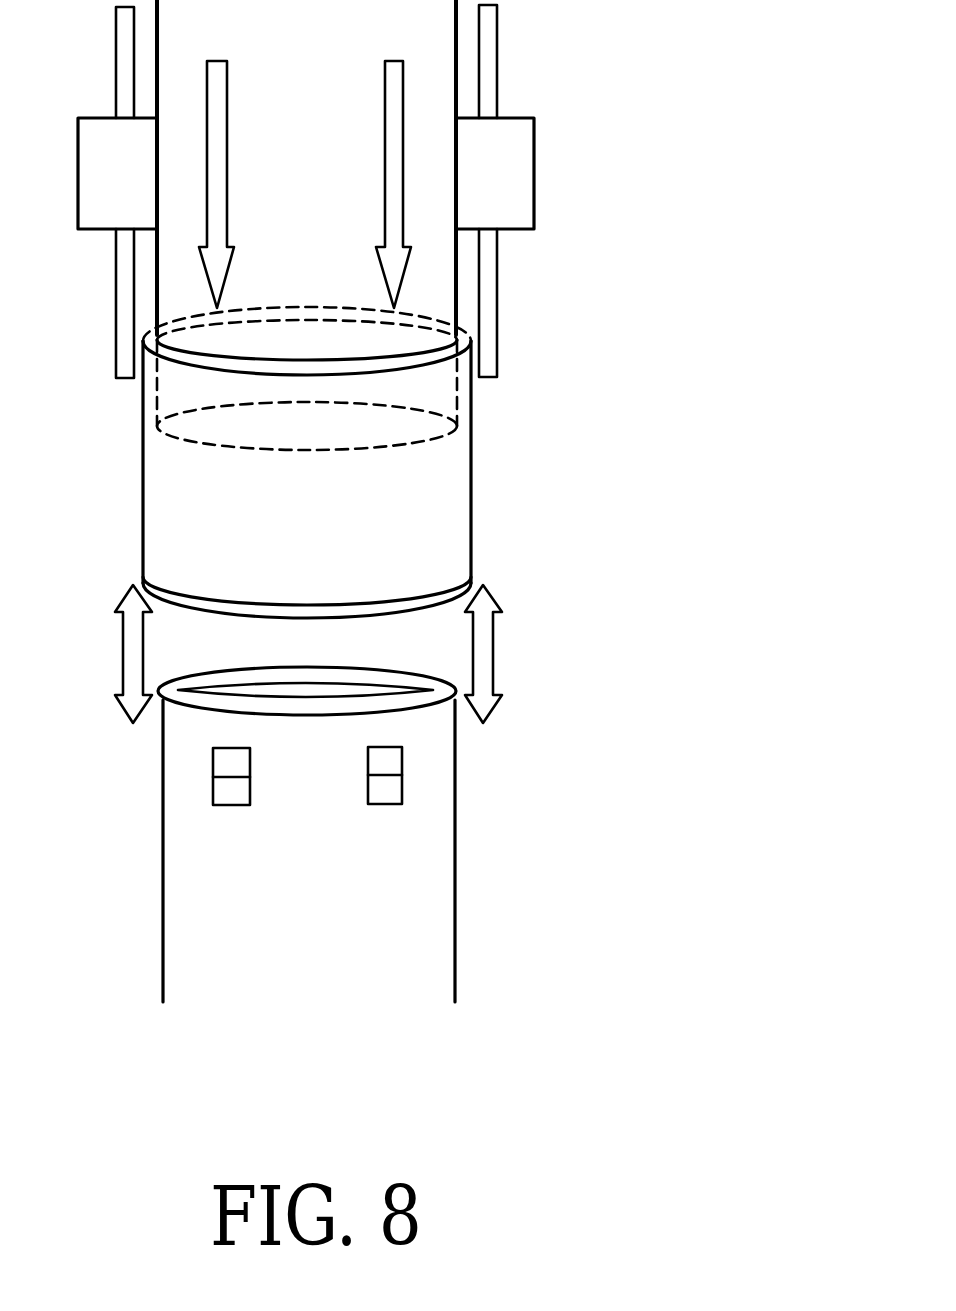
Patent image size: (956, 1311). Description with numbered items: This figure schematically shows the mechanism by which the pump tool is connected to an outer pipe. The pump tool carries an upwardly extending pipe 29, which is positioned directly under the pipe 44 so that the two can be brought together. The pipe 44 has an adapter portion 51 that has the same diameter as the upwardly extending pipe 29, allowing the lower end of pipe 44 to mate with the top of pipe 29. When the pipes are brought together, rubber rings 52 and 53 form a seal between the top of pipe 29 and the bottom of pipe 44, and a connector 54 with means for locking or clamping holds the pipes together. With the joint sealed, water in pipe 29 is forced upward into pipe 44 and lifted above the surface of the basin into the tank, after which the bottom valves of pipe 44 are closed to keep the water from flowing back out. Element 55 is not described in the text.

The upwardly extending pipe 29 is at (309, 851).
The pipe 44 is at (305, 184).
The adapter portion 51 is at (628, 315).
The rubber ring 52 is at (625, 507).
The rubber ring 53 is at (62, 792).
The connector 54 is at (307, 437).
The sensor boxes 55 is at (562, 770).